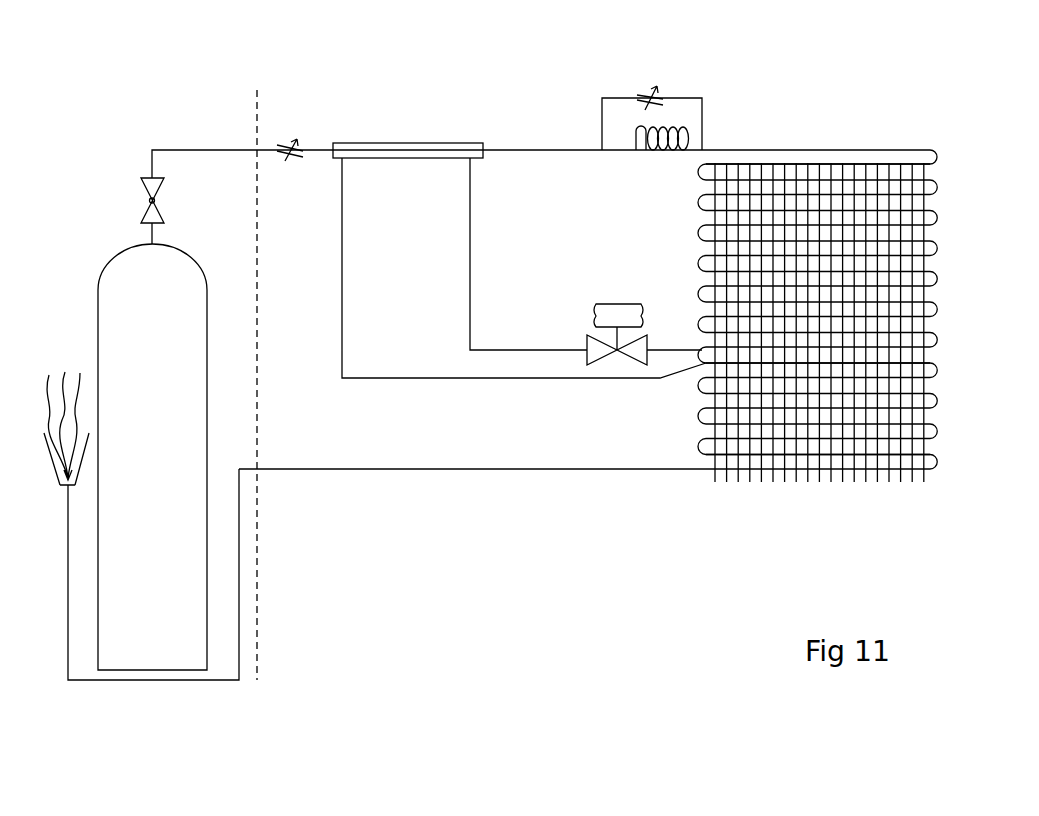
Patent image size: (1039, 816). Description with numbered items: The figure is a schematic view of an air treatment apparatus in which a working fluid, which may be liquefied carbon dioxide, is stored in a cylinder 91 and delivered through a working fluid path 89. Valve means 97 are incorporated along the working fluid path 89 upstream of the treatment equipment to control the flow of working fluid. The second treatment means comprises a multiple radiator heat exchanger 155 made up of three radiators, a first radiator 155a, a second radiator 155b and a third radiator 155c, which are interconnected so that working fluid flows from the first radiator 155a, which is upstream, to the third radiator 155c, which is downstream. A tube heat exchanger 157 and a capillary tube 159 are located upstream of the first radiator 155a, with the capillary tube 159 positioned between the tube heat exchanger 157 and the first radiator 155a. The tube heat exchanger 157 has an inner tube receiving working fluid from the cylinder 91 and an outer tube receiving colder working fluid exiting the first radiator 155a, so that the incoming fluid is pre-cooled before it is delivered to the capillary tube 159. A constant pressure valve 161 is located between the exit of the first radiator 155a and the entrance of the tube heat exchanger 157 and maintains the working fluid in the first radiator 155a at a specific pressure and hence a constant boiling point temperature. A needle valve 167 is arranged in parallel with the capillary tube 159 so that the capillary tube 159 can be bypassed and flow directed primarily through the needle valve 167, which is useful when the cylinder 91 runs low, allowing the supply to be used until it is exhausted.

The working fluid path 89 is at (193, 150).
The cylinder 91 is at (137, 300).
The valve means 97 is at (297, 135).
The tube heat exchanger 157 is at (433, 150).
The capillary tube 159 is at (650, 155).
The constant pressure valve 161 is at (590, 317).
The needle valve 167 is at (660, 86).
The heat exchanger 155 is at (953, 215).
The first radiator 155a is at (902, 192).
The second radiator 155b is at (919, 389).
The third radiator 155c is at (919, 460).